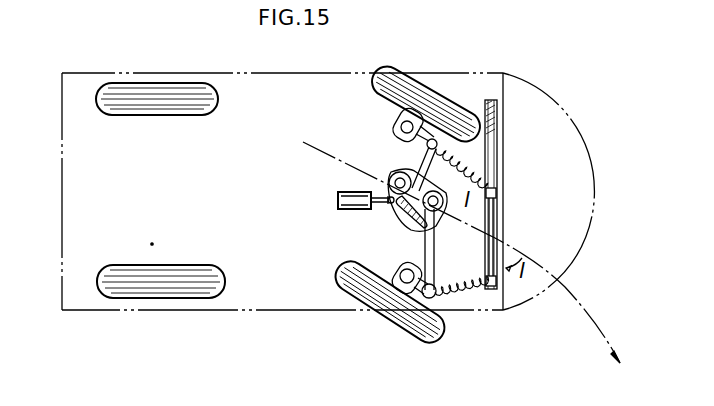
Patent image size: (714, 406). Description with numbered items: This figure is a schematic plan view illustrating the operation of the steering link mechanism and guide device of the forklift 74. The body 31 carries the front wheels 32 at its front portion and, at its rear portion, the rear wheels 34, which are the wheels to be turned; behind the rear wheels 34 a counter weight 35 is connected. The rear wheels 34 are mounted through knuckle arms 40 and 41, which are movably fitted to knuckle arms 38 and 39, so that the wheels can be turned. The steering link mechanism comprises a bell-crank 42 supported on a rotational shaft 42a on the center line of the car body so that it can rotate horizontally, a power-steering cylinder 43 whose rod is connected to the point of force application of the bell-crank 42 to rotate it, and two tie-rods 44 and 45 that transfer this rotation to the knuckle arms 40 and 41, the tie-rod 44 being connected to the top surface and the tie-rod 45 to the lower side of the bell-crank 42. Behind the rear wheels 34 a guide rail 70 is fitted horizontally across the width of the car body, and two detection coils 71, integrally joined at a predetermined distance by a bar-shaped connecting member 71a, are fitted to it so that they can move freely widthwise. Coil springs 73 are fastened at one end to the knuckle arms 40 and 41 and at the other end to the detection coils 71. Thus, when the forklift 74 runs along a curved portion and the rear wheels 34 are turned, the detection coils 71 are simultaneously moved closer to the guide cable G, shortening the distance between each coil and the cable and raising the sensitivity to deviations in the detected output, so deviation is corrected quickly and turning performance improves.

The body 31 is at (281, 78).
The front wheels 32 is at (149, 92).
The rear wheels 34 is at (424, 90).
The counter weight 35 is at (570, 128).
The knuckle arm 38 is at (395, 267).
The knuckle arm 39 is at (399, 117).
The knuckle arm 40 is at (414, 260).
The knuckle arm 41 is at (396, 136).
The bell-crank 42 is at (398, 221).
The rotational shaft 42a is at (389, 182).
The power-steering cylinder 43 is at (340, 214).
The tie-rod 44 is at (433, 236).
The tie-rod 45 is at (418, 161).
The guide rail 70 is at (492, 125).
The detection coils 71 is at (497, 191).
The connecting member 71a is at (500, 221).
The coil springs 73 is at (470, 160).
The forklift 74 is at (361, 63).
The guide cable G is at (567, 291).